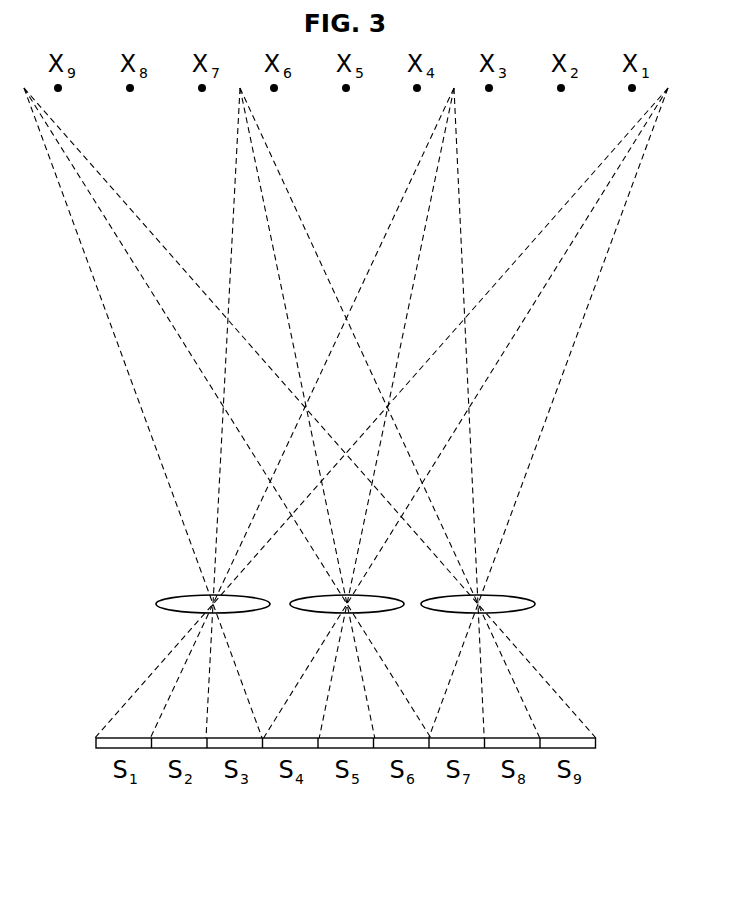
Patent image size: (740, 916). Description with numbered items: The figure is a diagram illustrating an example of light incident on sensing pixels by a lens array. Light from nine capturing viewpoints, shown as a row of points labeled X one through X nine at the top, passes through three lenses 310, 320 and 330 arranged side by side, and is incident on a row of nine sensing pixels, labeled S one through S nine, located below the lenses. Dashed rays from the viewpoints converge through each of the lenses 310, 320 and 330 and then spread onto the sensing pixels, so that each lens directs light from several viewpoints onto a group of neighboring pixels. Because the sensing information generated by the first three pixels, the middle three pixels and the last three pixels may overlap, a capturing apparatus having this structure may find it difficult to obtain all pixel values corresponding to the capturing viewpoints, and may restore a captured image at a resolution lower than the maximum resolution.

The lens 310 is at (255, 612).
The lens 320 is at (388, 612).
The lens 330 is at (528, 612).